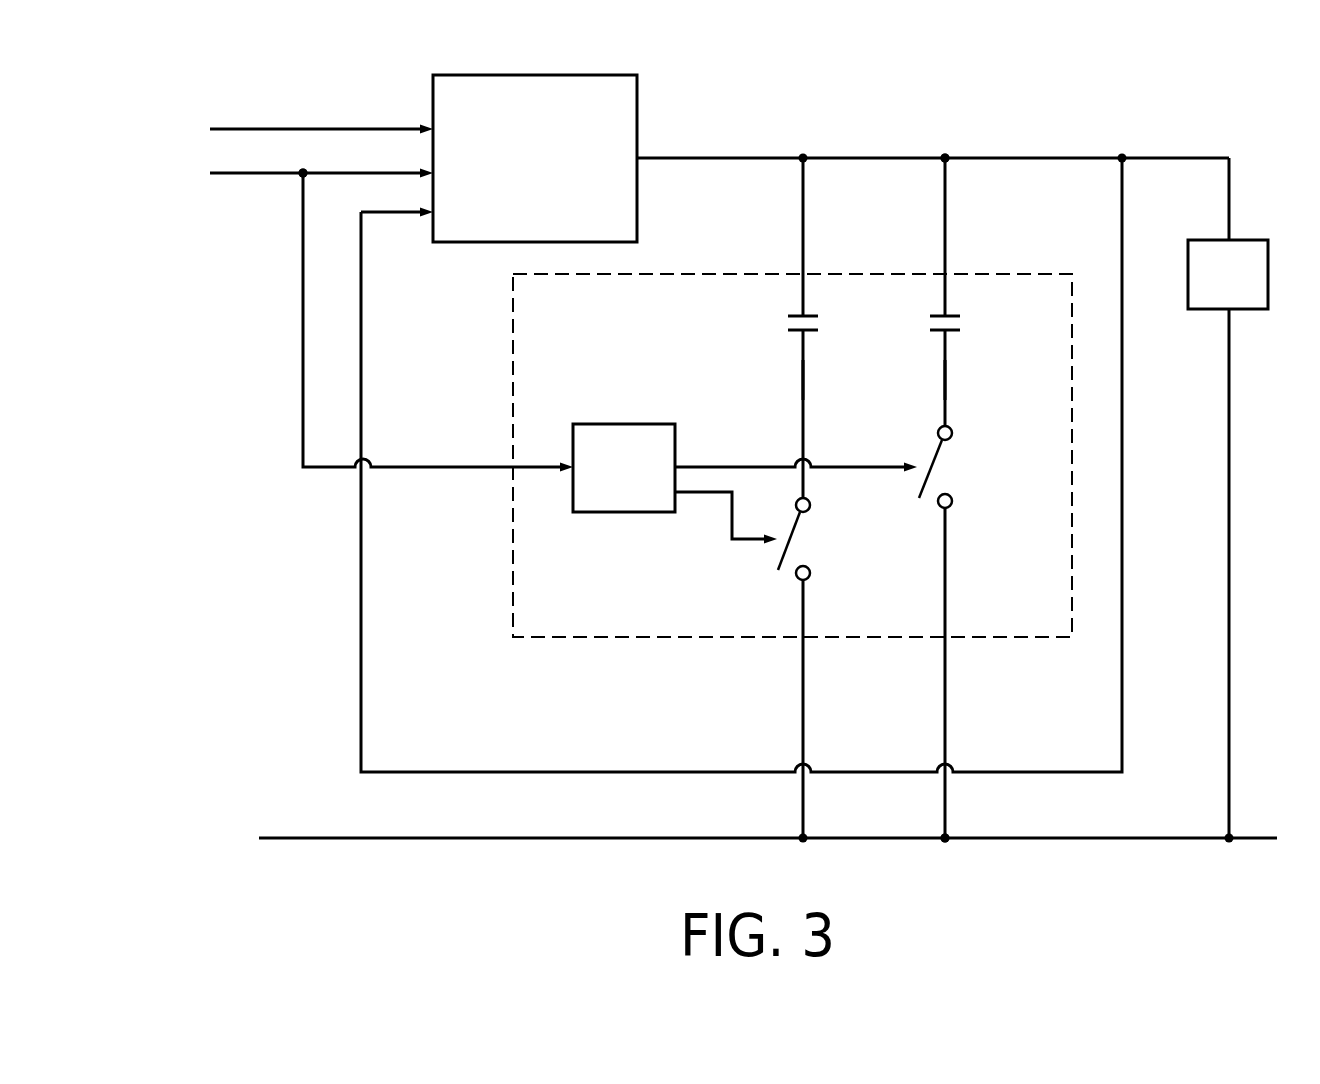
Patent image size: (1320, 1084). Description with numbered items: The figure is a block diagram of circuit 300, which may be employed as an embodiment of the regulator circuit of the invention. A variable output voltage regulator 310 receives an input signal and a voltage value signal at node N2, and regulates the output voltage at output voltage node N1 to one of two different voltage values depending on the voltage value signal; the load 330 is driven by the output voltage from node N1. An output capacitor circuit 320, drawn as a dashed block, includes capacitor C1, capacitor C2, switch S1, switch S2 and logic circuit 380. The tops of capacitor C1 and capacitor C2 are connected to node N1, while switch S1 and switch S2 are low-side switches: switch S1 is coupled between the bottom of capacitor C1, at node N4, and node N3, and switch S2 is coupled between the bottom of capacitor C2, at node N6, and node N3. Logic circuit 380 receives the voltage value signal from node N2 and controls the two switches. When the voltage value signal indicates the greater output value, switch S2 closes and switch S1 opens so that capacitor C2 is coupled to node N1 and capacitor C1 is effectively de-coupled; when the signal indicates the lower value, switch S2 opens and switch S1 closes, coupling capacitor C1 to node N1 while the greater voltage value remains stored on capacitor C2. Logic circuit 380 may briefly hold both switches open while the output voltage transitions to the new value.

The circuit 300 is at (1137, 68).
The variable output voltage regulator 310 is at (555, 219).
The output capacitor circuit 320 is at (575, 315).
The load 330 is at (1245, 301).
The logic circuit 380 is at (642, 492).
The capacitor C1 is at (962, 292).
The capacitor C2 is at (820, 328).
The switch S1 is at (958, 632).
The switch S2 is at (810, 668).
The output voltage node N1 is at (945, 157).
The node N2 is at (299, 181).
The node N3 is at (950, 837).
The node between C1 and S1 N4 is at (947, 381).
The node between C2 and S2 N6 is at (805, 381).